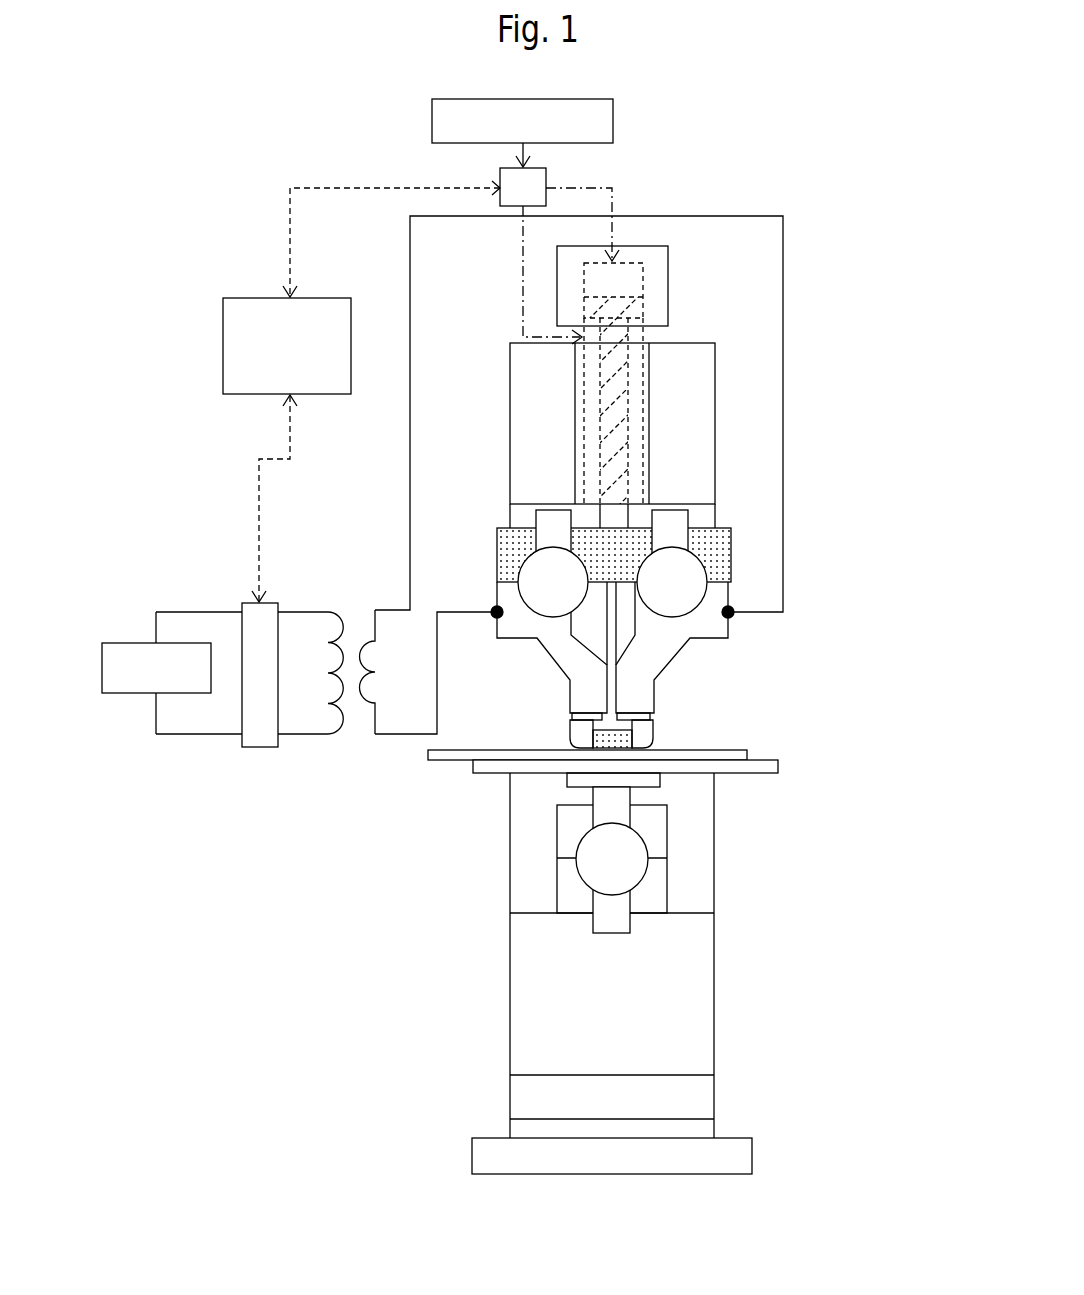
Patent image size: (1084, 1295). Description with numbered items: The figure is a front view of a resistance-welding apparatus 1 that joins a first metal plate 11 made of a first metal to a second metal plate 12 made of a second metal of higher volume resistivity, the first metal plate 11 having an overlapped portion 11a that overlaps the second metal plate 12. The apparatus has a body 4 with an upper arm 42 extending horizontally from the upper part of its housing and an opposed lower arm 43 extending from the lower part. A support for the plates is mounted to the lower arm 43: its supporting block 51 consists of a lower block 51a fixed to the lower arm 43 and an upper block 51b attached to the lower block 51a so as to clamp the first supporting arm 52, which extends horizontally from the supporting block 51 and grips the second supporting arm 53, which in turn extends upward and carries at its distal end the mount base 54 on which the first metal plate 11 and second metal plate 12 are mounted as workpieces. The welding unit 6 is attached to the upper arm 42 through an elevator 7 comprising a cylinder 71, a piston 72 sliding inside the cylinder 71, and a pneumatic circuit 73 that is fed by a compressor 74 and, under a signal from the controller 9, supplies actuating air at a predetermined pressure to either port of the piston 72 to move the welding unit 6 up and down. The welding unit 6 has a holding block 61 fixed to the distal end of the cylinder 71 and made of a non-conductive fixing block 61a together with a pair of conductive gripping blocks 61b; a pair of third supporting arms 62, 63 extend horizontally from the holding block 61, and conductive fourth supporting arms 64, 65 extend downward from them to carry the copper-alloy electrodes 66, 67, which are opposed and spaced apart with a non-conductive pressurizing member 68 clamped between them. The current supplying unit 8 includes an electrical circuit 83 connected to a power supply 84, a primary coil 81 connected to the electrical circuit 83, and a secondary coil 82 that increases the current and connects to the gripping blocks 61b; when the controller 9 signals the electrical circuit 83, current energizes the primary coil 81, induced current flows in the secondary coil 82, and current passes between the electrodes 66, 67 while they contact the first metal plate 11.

The resistance-welding apparatus 1 is at (758, 120).
The body 4 is at (480, 395).
The upper arm 42 is at (549, 410).
The lower arm 43 is at (535, 855).
The supporting block 51 is at (790, 806).
The lower block 51a is at (660, 887).
The upper block 51b is at (663, 822).
The first supporting arm 52 is at (600, 865).
The second supporting arm 53 is at (607, 905).
The mount base 54 is at (540, 773).
The welding unit 6 is at (850, 520).
The holding block 61 is at (507, 565).
The fixing block 61a is at (722, 540).
The gripping block 61b is at (530, 620).
The third supporting arm 62 is at (540, 572).
The third supporting arm 63 is at (695, 582).
The fourth supporting arm 64 is at (585, 680).
The fourth supporting arm 65 is at (663, 662).
The electrode 66 is at (575, 743).
The electrode 67 is at (647, 742).
The pressurizing member 68 is at (622, 737).
The elevator 7 is at (685, 263).
The cylinder 71 is at (663, 291).
The piston 72 is at (630, 382).
The pneumatic circuit 73 is at (535, 182).
The compressor 74 is at (613, 127).
The current supplying unit 8 is at (200, 570).
The primary coil 81 is at (328, 611).
The secondary coil 82 is at (377, 609).
The electrical circuit 83 is at (262, 750).
The power supply 84 is at (142, 697).
The controller 9 is at (231, 360).
The first metal plate 11 is at (747, 753).
The overlapped portion 11a is at (663, 757).
The second metal plate 12 is at (748, 770).